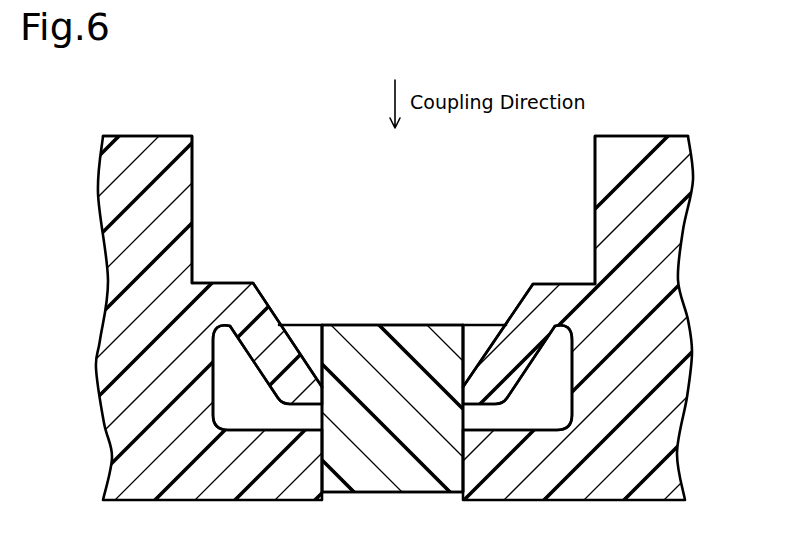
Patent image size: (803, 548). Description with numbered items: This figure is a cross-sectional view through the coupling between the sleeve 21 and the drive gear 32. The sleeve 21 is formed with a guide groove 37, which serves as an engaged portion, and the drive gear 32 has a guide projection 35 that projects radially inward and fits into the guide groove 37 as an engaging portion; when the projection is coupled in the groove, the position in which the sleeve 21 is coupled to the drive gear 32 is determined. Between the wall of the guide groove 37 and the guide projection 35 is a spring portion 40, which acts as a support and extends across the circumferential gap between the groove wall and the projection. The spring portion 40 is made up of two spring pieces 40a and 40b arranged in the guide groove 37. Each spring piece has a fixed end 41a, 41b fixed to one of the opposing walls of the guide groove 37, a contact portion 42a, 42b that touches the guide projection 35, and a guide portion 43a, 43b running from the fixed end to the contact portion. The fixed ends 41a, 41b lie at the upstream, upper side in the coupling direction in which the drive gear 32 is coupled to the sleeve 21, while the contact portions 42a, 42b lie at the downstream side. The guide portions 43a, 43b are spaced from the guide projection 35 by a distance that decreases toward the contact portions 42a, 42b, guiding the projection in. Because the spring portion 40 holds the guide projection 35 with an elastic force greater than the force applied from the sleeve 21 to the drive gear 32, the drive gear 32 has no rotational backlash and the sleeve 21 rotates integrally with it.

The sleeve 21 is at (686, 345).
The drive gear 32 is at (372, 482).
The guide projection 35 is at (392, 408).
The guide groove 37 is at (193, 163).
The spring portion 40 is at (585, 221).
The spring piece 40a is at (556, 267).
The spring piece 40b is at (231, 266).
The fixed end 41a is at (542, 296).
The fixed end 41b is at (243, 299).
The contact portion 42a is at (463, 390).
The contact portion 42b is at (326, 393).
The guide portion 43a is at (518, 353).
The guide portion 43b is at (264, 360).